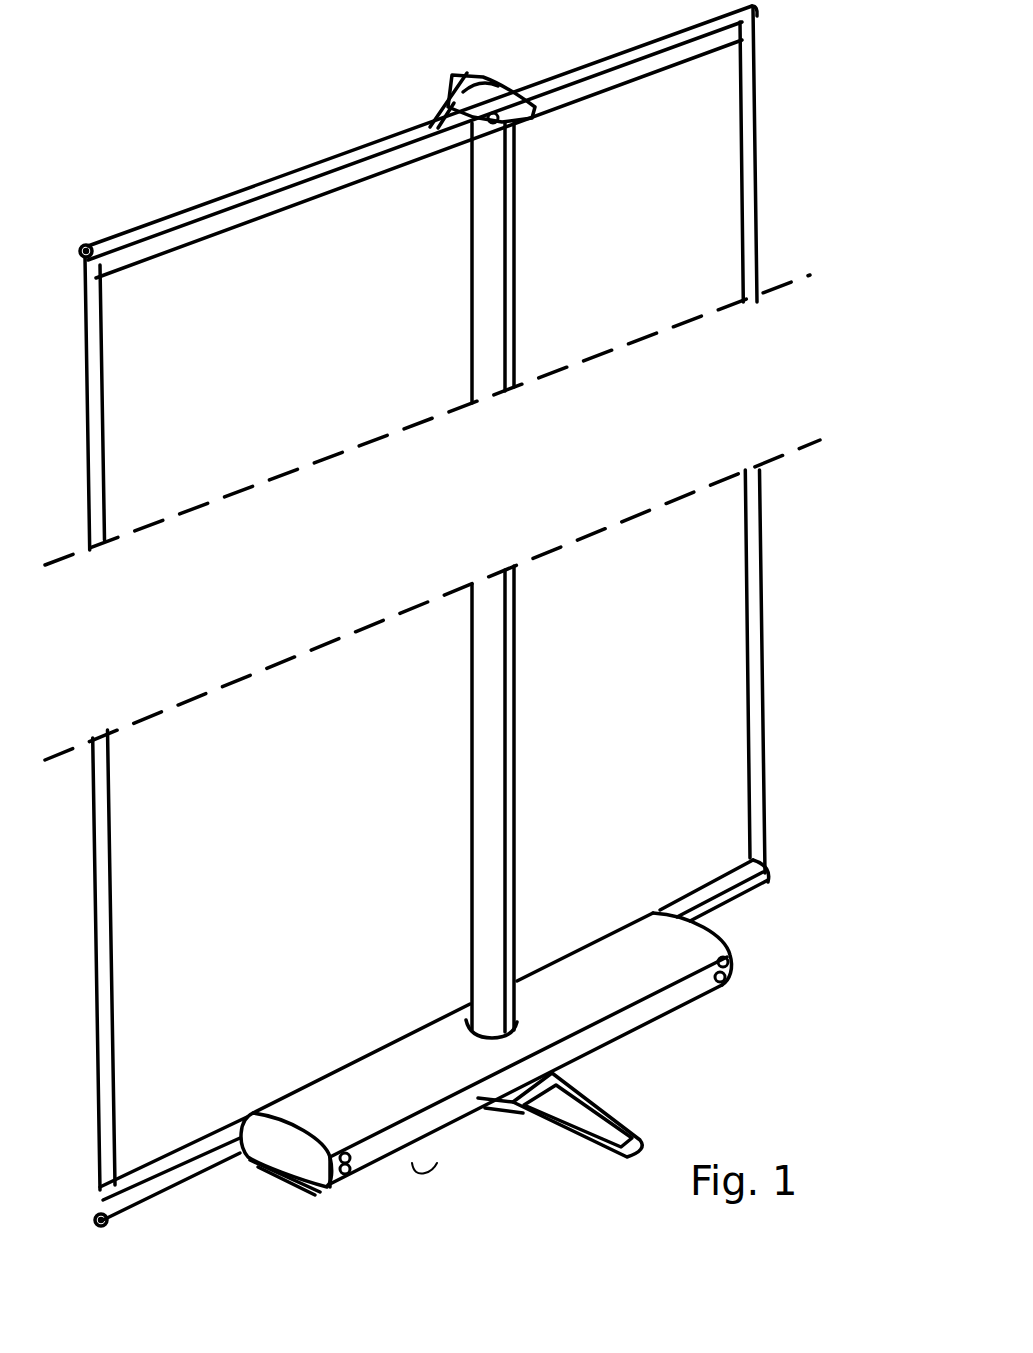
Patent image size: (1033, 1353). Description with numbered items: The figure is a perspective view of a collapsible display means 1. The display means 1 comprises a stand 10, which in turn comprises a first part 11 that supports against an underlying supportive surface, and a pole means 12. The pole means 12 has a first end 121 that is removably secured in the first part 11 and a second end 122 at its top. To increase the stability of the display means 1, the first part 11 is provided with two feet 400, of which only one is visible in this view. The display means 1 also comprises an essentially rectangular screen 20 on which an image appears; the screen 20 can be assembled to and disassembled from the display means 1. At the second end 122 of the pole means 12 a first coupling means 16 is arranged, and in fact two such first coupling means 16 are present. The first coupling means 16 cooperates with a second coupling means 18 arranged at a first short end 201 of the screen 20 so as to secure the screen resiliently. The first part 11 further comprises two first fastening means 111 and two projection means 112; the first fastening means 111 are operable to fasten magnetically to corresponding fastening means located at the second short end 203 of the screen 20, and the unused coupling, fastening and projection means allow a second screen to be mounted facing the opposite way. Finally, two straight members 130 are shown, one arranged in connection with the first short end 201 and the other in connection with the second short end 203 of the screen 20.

The collapsible display means 1 is at (496, 1144).
The stand 10 is at (780, 823).
The first part 11 is at (280, 1157).
The pole means 12 is at (517, 635).
The first coupling means 16 is at (480, 60).
The second coupling means 18 is at (438, 104).
The screen 20 is at (432, 543).
The first fastening means 111 is at (724, 985).
The projection means 112 is at (737, 958).
The first end 121 is at (515, 1015).
The second end 122 is at (515, 125).
The straight member 130 is at (463, 613).
The first short end 201 is at (370, 162).
The second short end 203 is at (178, 1143).
The foot 400 is at (597, 1093).